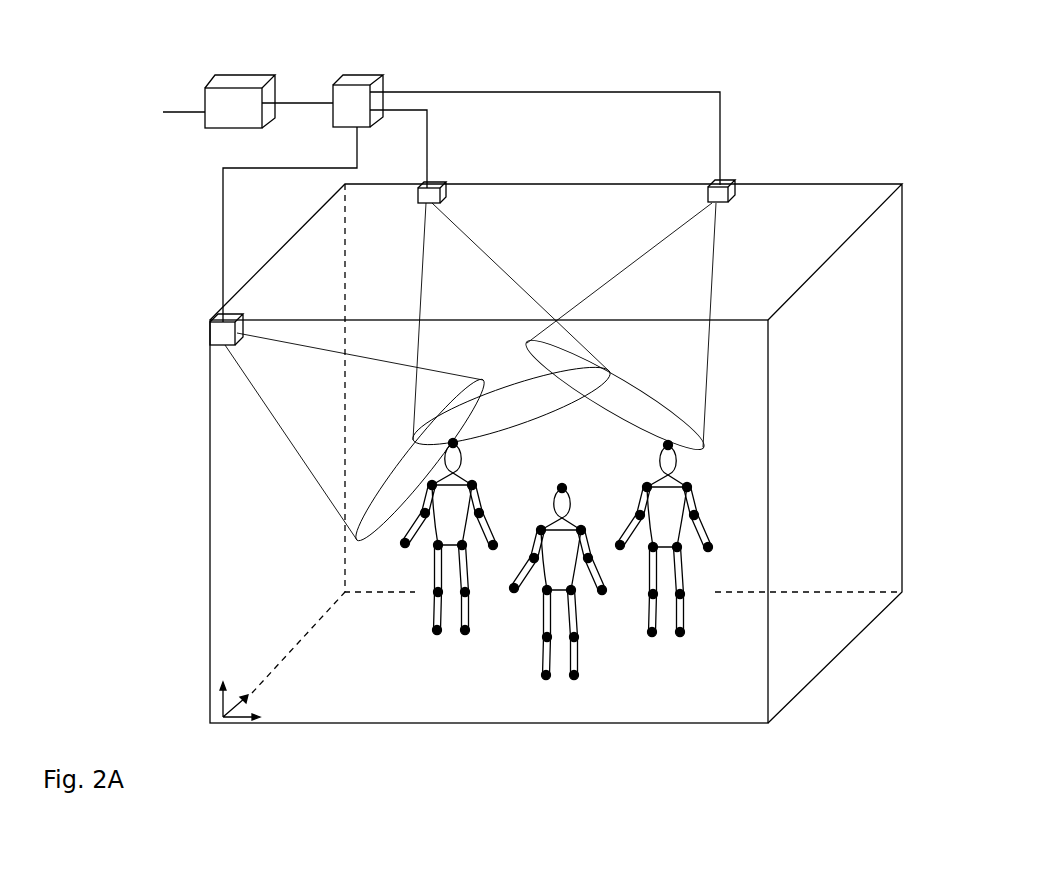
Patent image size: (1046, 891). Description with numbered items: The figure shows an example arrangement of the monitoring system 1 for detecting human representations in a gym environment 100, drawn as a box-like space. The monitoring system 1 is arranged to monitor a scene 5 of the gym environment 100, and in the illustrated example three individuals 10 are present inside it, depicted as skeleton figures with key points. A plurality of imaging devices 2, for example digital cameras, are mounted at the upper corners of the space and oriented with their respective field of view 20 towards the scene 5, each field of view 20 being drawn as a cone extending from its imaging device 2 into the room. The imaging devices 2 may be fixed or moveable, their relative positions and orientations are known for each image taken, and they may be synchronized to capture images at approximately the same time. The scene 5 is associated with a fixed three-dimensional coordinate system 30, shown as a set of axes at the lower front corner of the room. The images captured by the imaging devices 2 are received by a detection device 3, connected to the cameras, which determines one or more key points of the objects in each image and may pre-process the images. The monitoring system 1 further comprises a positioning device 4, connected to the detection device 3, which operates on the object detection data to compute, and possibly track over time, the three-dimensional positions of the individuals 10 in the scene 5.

The monitoring system 1 is at (757, 57).
The imaging devices 2 is at (438, 186).
The detection device 3 is at (362, 83).
The positioning device 4 is at (236, 87).
The scene 5 is at (803, 468).
The individuals 10 is at (463, 477).
The field of view 20 is at (500, 262).
The 3D coordinate system 30 is at (221, 712).
The gym environment 100 is at (834, 185).